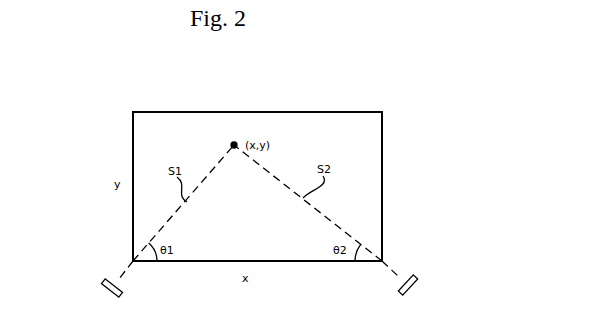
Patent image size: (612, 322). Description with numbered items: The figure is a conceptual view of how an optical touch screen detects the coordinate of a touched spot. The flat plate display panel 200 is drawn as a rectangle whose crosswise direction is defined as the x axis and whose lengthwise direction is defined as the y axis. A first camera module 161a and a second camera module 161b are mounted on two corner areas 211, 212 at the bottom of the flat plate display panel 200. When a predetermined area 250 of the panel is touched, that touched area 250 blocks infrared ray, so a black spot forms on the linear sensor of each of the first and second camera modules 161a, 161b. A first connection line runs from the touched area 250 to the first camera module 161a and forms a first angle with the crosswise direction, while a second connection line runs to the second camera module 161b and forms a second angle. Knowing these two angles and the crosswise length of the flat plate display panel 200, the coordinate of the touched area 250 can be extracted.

The flat plate display panel 200 is at (296, 112).
The touched predetermined area 250 is at (233, 145).
The corner area 211 is at (133, 261).
The corner area 212 is at (382, 261).
The first camera module 161a is at (102, 291).
The second camera module 161b is at (415, 288).